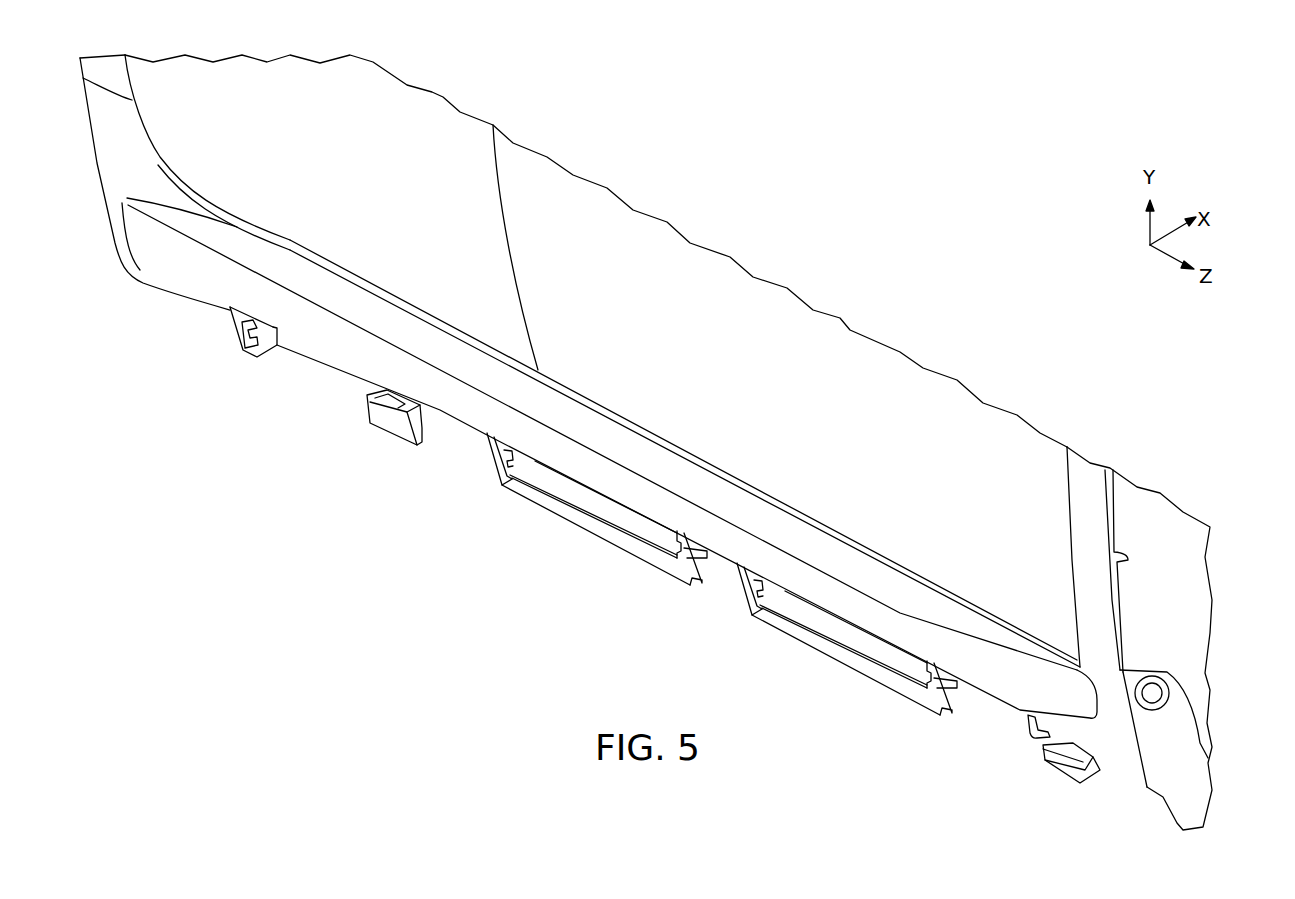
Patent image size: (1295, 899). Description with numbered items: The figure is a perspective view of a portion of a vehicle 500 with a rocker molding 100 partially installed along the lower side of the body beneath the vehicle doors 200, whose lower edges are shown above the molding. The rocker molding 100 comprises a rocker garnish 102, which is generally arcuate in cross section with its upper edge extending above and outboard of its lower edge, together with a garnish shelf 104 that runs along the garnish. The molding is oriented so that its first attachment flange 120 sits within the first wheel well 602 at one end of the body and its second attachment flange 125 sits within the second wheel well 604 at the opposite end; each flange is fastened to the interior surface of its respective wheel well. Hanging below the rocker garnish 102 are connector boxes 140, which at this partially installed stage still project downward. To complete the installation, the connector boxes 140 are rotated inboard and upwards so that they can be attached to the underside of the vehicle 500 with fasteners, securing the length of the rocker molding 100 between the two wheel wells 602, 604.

The rocker molding 100 is at (1015, 715).
The rocker garnish 102 is at (460, 413).
The garnish shelf 104 is at (358, 307).
The first attachment flange 120 is at (97, 168).
The second attachment flange 125 is at (1173, 750).
The connector boxes 140 is at (592, 503).
The vehicle doors 200 is at (442, 125).
The vehicle 500 is at (921, 240).
The first wheel well 602 is at (90, 98).
The second wheel well 604 is at (1205, 632).